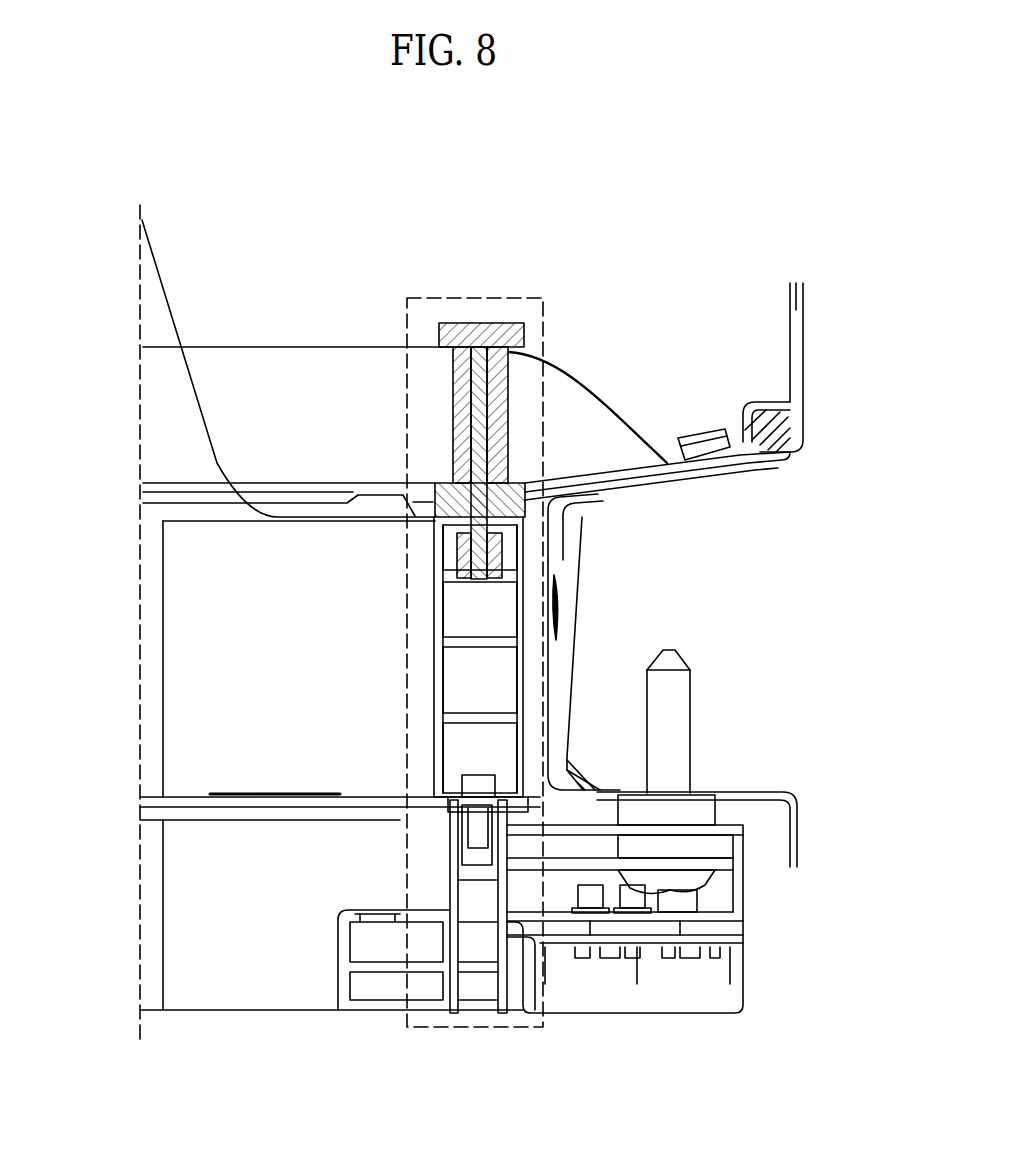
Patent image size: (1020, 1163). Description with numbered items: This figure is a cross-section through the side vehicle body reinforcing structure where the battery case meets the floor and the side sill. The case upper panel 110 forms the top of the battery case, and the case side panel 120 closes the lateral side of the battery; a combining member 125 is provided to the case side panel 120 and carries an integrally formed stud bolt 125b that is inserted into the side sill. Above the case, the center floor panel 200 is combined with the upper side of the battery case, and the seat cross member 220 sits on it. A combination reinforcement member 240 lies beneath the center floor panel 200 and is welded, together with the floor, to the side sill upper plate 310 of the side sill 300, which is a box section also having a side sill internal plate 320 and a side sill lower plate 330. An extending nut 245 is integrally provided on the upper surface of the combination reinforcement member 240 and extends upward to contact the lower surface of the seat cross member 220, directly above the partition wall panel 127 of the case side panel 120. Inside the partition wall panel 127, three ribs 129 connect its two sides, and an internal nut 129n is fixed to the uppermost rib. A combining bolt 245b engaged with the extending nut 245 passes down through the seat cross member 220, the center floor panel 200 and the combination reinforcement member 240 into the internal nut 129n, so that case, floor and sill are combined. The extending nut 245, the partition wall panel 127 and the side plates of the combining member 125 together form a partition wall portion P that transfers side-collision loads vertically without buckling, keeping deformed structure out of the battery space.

The case upper panel 110 is at (162, 305).
The center floor panel 200 is at (318, 500).
The seat cross member 220 is at (557, 360).
The combining bolt 245b is at (478, 323).
The extending nut 245 is at (503, 413).
The combination reinforcement member 240 is at (550, 510).
The side sill internal plate 320 is at (572, 622).
The side sill upper plate 310 is at (712, 468).
The side sill 300 is at (790, 342).
The case side panel 120 is at (180, 687).
The ribs 129 is at (460, 663).
The internal nut 129n is at (460, 550).
The partition wall panel 127 is at (440, 692).
The combining member 125 is at (175, 888).
The partition wall portion P is at (470, 1030).
The stud bolt 125b is at (685, 693).
The side sill lower plate 330 is at (737, 787).